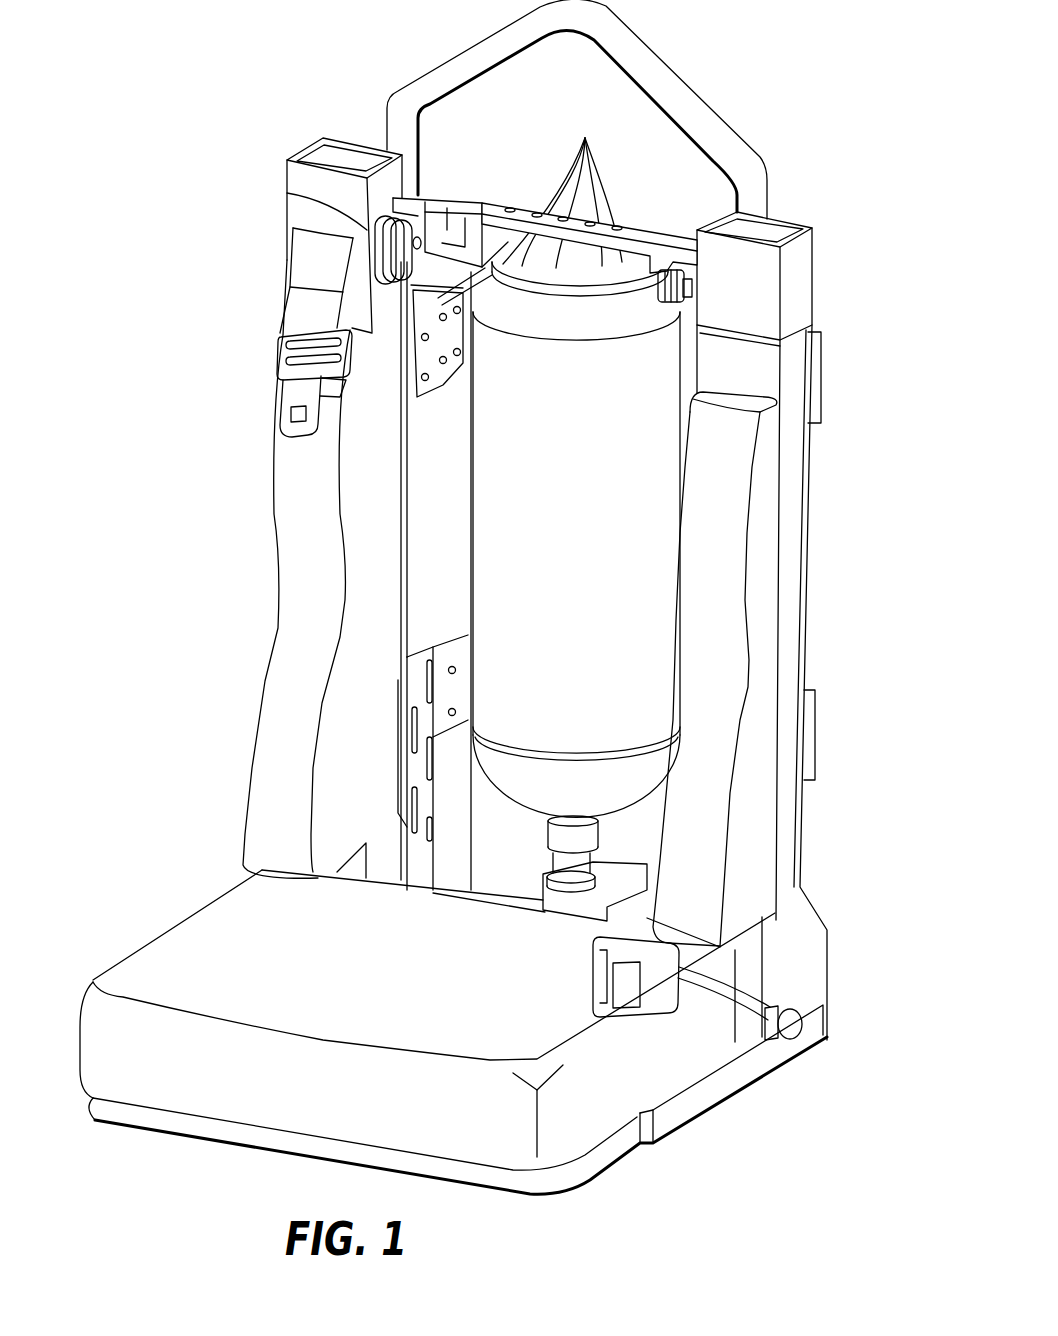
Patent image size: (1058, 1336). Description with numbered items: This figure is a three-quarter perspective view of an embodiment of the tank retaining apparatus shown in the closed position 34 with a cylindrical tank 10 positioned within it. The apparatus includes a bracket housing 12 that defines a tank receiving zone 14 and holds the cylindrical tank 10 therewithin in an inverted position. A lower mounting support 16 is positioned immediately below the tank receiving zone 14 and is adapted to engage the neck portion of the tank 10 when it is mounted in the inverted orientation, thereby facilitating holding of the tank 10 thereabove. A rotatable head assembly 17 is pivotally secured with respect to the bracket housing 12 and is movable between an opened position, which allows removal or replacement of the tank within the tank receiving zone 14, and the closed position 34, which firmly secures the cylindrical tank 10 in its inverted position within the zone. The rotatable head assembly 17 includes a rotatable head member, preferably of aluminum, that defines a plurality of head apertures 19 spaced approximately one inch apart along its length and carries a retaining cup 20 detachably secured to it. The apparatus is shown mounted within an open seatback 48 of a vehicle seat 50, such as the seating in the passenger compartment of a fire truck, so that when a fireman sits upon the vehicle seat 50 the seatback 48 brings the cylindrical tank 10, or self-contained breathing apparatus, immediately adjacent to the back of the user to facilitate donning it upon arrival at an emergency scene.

The cylindrical tank 10 is at (595, 532).
The bracket housing 12 is at (655, 50).
The tank receiving zone 14 is at (650, 838).
The lower mounting support 16 is at (540, 900).
The rotatable head assembly 17 is at (287, 193).
The head apertures 19 is at (585, 140).
The retaining cup 20 is at (597, 257).
The closed position 34 is at (667, 240).
The seatback 48 is at (730, 443).
The vehicle seat 50 is at (237, 940).